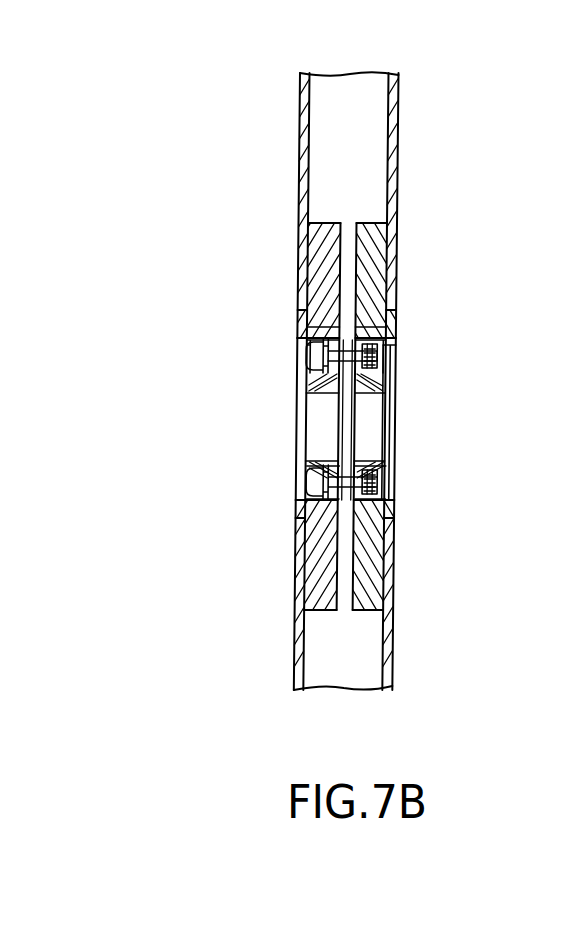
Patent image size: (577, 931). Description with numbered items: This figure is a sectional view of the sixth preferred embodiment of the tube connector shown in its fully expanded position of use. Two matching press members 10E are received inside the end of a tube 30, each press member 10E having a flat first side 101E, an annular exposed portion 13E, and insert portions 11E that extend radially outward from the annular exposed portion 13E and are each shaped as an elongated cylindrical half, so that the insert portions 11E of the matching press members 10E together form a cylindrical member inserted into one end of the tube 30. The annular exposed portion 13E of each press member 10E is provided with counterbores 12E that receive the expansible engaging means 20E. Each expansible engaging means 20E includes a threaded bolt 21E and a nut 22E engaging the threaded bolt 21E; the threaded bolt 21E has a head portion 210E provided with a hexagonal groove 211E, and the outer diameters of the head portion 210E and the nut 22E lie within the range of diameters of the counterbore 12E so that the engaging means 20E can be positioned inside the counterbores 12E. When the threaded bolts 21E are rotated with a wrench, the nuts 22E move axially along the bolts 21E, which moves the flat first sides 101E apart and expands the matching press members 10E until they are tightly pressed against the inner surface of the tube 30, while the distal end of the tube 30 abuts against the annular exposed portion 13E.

The tube 30 is at (400, 117).
The insert portion 11E is at (400, 235).
The flat first side 101E is at (351, 236).
The press member 10E is at (300, 461).
The annular exposed portion 13E is at (398, 315).
The counterbore 12E is at (396, 349).
The nut 22E is at (322, 326).
The threaded bolt 21E is at (318, 356).
The expansible engaging means 20E is at (171, 349).
The head portion 210E is at (398, 392).
The hexagonal groove 211E is at (398, 362).